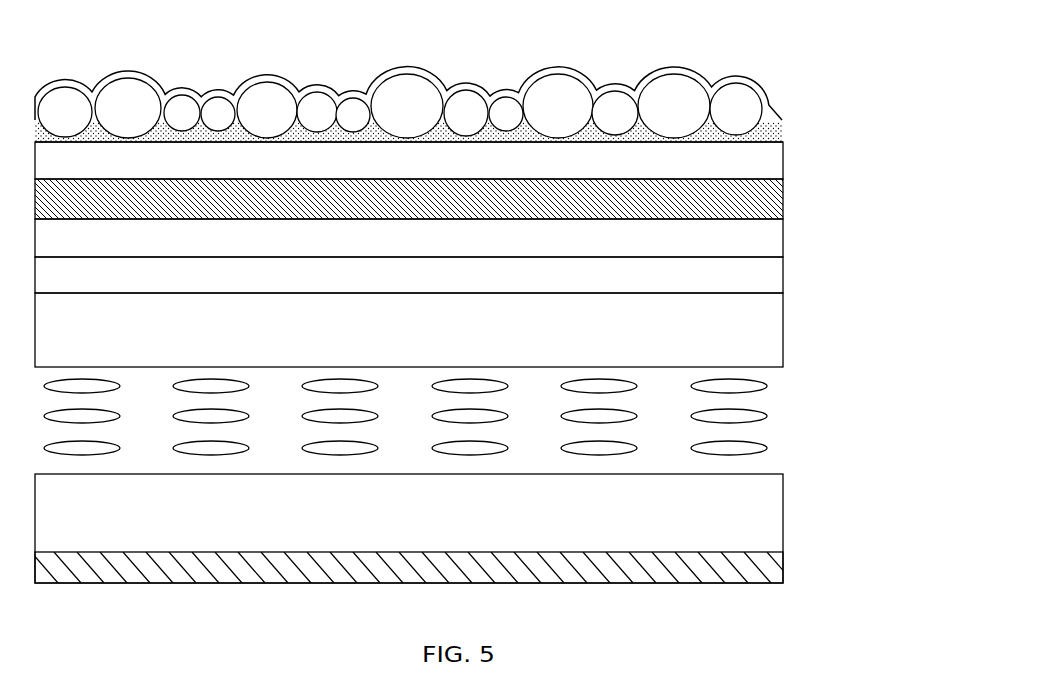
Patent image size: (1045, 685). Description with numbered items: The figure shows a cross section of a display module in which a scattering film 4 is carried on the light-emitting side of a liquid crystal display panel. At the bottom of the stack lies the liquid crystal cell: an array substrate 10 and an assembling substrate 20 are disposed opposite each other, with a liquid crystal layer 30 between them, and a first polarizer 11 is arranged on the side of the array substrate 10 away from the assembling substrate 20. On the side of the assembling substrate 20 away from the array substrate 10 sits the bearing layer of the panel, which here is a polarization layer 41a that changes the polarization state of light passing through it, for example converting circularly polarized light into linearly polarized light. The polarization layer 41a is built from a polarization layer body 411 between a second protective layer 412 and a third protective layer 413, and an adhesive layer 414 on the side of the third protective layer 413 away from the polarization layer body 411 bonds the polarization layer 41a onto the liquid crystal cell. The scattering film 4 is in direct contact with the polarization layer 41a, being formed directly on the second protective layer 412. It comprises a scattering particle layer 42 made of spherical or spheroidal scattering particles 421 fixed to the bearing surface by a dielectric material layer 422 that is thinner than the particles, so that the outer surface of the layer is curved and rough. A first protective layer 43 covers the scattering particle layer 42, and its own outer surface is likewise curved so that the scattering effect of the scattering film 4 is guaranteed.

The scattering film 4 is at (482, 82).
The polarization layer 41a is at (474, 217).
The polarization layer body 411 is at (783, 204).
The second protective layer 412 is at (783, 166).
The third protective layer 413 is at (783, 241).
The adhesive layer 414 is at (440, 275).
The scattering particle layer 42 is at (461, 101).
The scattering particles 421 is at (743, 93).
The dielectric material layer 422 is at (783, 130).
The first protective layer 43 is at (727, 82).
The assembling substrate 20 is at (778, 344).
The liquid crystal layer 30 is at (782, 434).
The array substrate 10 is at (781, 528).
The first polarizer 11 is at (783, 568).